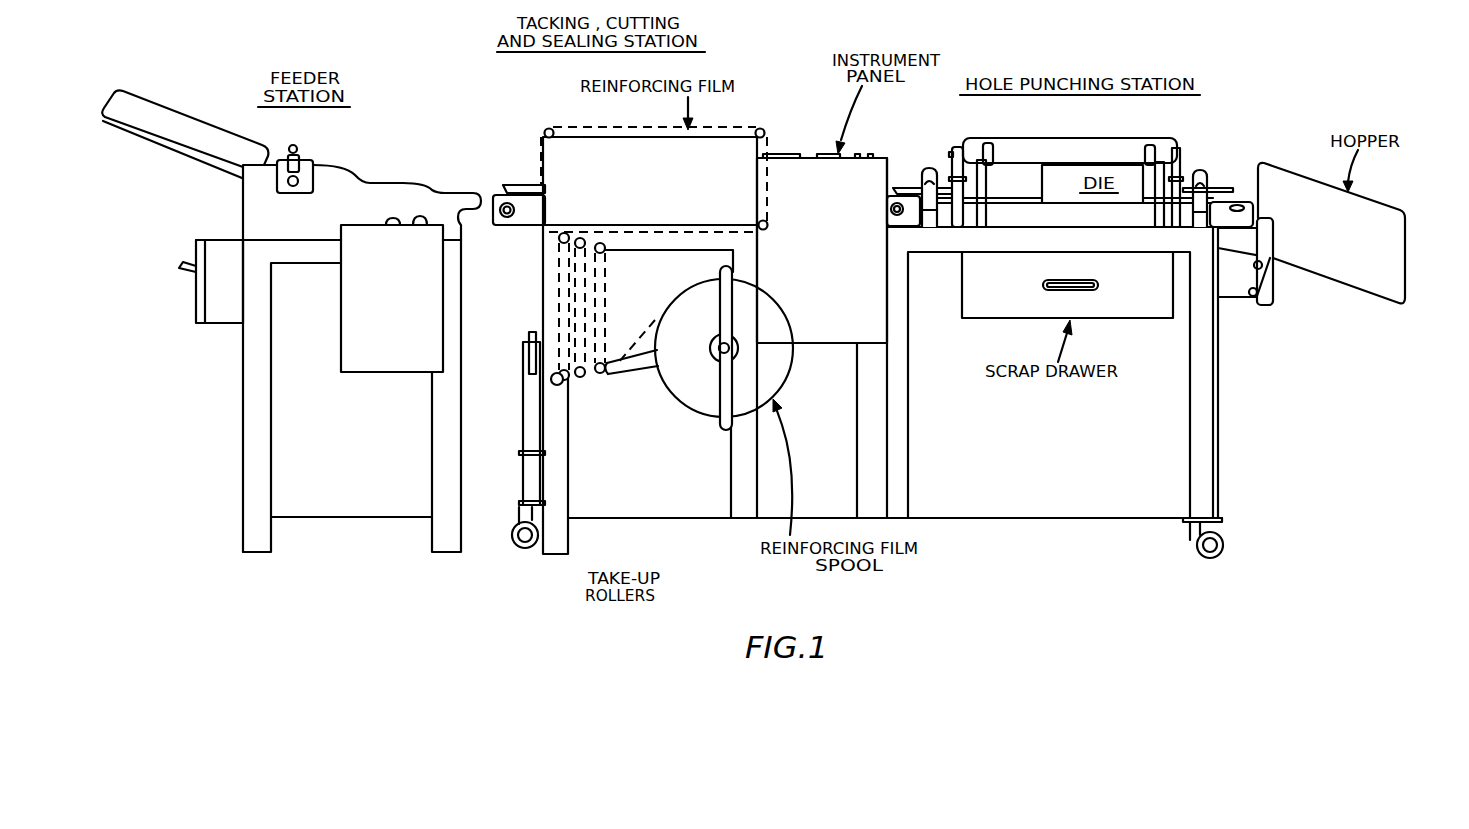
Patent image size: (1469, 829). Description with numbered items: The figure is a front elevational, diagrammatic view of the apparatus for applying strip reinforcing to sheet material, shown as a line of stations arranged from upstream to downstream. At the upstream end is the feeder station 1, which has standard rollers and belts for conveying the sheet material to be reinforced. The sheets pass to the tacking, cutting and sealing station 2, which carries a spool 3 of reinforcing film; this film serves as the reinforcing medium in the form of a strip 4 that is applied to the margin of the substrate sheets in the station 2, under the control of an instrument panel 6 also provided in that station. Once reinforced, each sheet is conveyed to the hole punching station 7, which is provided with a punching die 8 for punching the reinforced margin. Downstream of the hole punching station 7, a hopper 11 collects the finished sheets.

The feeder station 1 is at (403, 184).
The tacking, cutting and sealing station 2 is at (541, 162).
The spool 3 is at (786, 380).
The strip 4 is at (587, 124).
The instrument panel 6 is at (808, 173).
The hole punching station 7 is at (951, 151).
The punching die 8 is at (1125, 165).
The hopper 11 is at (1342, 272).